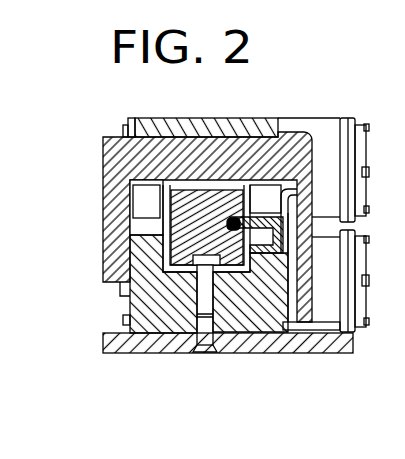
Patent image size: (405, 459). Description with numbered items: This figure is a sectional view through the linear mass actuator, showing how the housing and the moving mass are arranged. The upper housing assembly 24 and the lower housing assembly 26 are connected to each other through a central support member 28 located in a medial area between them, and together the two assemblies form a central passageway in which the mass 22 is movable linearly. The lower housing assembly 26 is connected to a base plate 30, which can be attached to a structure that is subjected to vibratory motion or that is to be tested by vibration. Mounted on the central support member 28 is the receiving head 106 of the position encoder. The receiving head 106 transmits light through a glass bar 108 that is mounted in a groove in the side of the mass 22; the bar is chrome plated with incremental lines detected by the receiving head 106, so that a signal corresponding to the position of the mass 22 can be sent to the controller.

The upper housing assembly 24 is at (236, 112).
The receiving head 106 is at (282, 190).
The central support member 28 is at (101, 208).
The mass 22 is at (130, 265).
The lower housing assembly 26 is at (118, 328).
The base plate 30 is at (170, 356).
The glass bar 108 is at (266, 214).